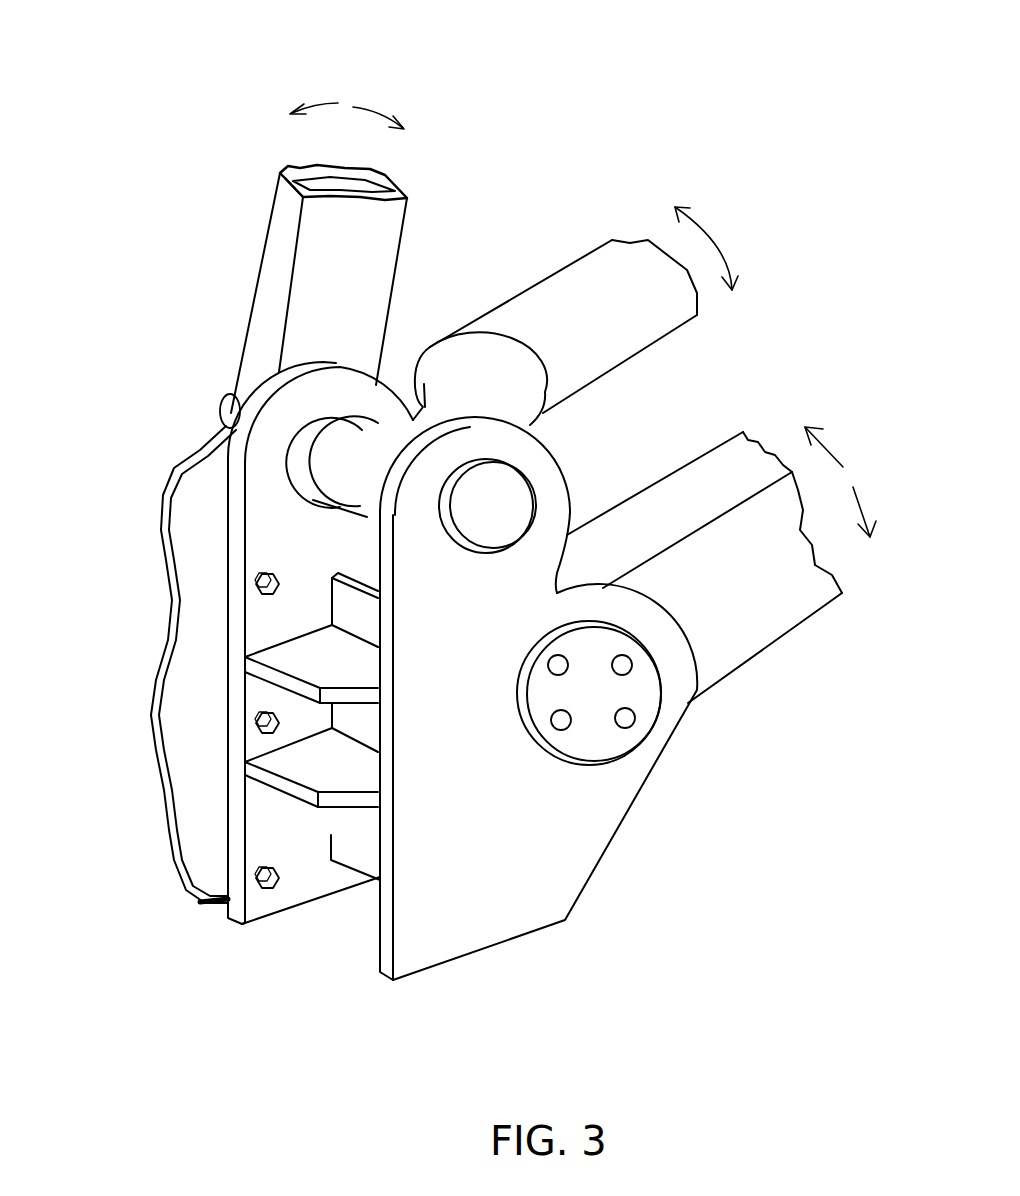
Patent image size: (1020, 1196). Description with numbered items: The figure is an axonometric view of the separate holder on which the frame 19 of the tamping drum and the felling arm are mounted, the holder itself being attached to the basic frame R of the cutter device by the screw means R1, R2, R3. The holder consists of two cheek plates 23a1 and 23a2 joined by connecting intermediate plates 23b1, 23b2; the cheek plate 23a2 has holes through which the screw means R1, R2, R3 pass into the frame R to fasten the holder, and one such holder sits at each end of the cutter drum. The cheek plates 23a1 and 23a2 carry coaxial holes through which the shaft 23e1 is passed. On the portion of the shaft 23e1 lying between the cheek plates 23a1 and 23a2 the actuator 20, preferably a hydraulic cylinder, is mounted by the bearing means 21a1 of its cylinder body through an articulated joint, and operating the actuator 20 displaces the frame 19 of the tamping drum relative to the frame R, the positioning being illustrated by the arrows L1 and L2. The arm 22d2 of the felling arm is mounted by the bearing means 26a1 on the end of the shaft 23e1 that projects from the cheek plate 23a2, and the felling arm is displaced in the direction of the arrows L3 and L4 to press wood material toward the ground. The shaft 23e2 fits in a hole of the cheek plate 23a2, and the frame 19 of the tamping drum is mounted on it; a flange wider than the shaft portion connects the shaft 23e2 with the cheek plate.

The frame 19 is at (735, 665).
The actuator 20 is at (563, 250).
The bearing means 21a1 is at (365, 430).
The arm 22d2 is at (268, 248).
The cheek plate 23a1 is at (518, 902).
The cheek plate 23a2 is at (260, 490).
The intermediate plate 23b1 is at (312, 645).
The intermediate plate 23b2 is at (327, 832).
The shaft 23e1 is at (478, 528).
The shaft 23e2 is at (597, 718).
The bearing means 26a1 is at (233, 392).
The frame R is at (170, 516).
The screw means R1 is at (256, 588).
The screw means R2 is at (256, 717).
The screw means R3 is at (256, 868).
The arrow L1 is at (828, 445).
The arrow L2 is at (858, 500).
The arrow L3 is at (310, 107).
The arrow L4 is at (378, 110).